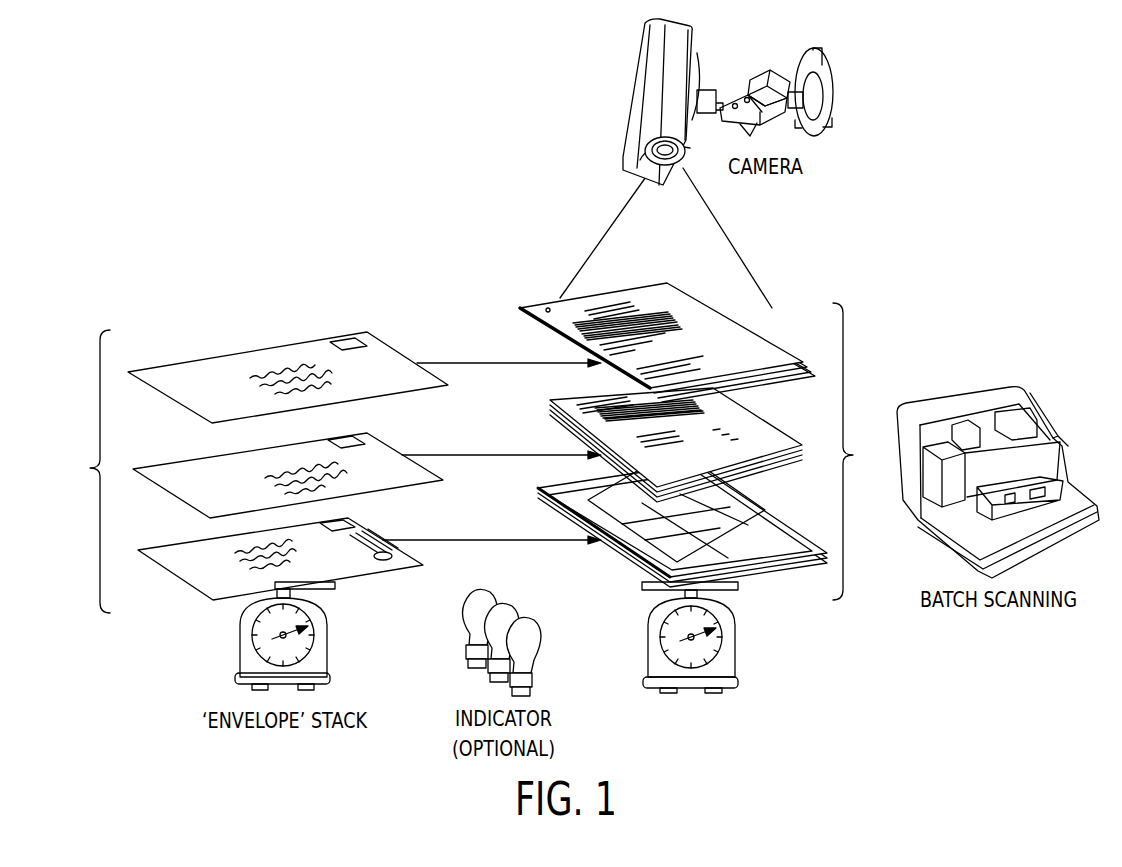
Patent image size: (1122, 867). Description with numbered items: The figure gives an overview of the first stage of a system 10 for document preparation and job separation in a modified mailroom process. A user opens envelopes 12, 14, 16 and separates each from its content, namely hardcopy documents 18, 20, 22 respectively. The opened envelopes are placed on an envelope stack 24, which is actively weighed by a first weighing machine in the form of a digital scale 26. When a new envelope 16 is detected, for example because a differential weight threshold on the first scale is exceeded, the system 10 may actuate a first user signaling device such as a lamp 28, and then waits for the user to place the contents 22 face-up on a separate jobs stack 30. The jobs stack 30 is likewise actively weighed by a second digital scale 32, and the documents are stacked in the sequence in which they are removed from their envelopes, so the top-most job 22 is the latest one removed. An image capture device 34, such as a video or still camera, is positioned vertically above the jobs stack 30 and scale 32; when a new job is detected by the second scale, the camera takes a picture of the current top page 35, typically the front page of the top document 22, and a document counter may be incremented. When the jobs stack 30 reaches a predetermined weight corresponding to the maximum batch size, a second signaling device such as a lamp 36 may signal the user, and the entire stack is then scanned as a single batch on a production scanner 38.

The system 10 is at (385, 226).
The envelope 12 is at (160, 555).
The envelope 14 is at (168, 472).
The envelope 16 is at (173, 373).
The hardcopy document 18 is at (557, 490).
The hardcopy document 20 is at (572, 400).
The hardcopy document 22 is at (667, 320).
The stack of envelopes 24 is at (256, 463).
The digital scale 26 is at (240, 641).
The lamp 28 is at (509, 647).
The jobs stack 30 is at (694, 484).
The digital scale 32 is at (650, 645).
The image capture device 34 is at (625, 108).
The top page 35 is at (628, 305).
The lamp 36 is at (485, 632).
The production scanner 38 is at (962, 390).